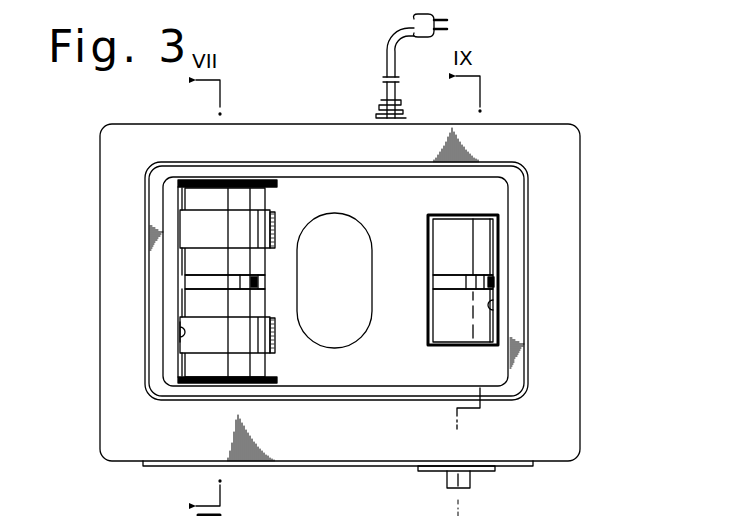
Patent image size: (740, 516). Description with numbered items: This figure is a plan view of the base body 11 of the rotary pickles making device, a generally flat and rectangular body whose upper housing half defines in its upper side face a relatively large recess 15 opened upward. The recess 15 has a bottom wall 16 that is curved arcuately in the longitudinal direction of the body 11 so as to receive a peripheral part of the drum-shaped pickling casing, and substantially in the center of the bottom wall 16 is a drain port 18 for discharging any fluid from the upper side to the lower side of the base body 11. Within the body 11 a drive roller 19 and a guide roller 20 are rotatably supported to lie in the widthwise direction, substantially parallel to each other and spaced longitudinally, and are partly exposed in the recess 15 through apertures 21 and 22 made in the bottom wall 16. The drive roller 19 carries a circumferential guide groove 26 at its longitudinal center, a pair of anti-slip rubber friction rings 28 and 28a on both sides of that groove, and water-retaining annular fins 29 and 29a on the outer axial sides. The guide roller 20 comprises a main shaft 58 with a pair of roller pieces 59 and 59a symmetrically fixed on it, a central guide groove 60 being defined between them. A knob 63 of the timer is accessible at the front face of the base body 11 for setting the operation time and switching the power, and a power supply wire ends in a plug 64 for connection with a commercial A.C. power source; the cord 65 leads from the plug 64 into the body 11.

The base body 11 is at (586, 167).
The recess 15 is at (386, 207).
The bottom wall 16 is at (463, 185).
The drain port 18 is at (325, 227).
The drive roller 19 is at (183, 265).
The guide roller 20 is at (498, 263).
The aperture 21 is at (182, 338).
The aperture 22 is at (493, 305).
The circumferential guide groove 26 is at (193, 282).
The friction ring 28 is at (208, 343).
The friction ring 28a is at (190, 227).
The water-retaining annular fin 29 is at (182, 376).
The water-retaining annular fin 29a is at (176, 181).
The main shaft 58 is at (494, 281).
The roller piece 59 is at (488, 332).
The roller piece 59a is at (485, 240).
The central guide groove 60 is at (447, 280).
The knob 63 is at (470, 482).
The plug 64 is at (410, 17).
The cord 65 is at (387, 50).